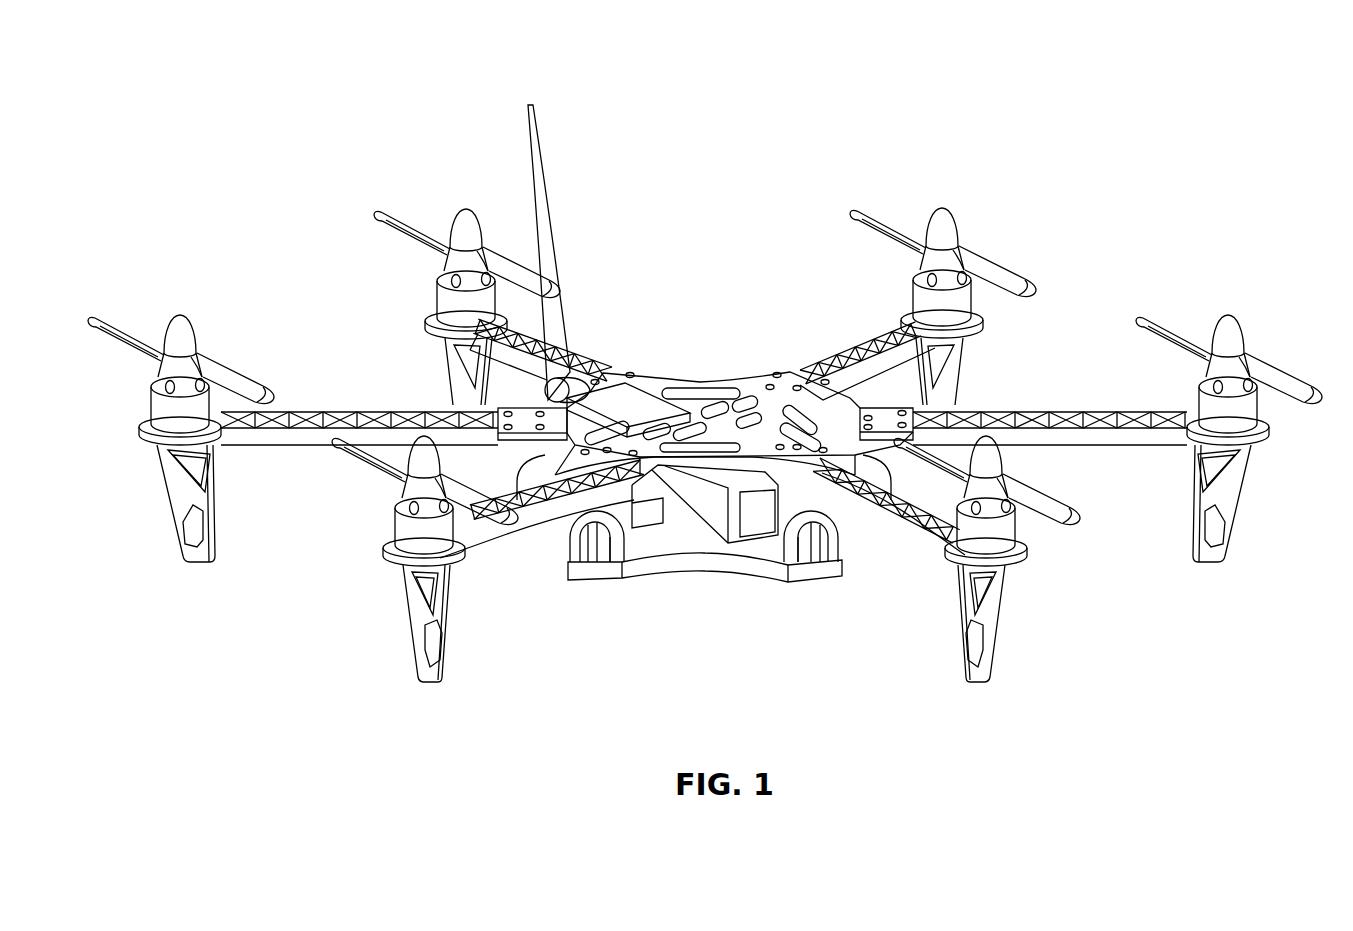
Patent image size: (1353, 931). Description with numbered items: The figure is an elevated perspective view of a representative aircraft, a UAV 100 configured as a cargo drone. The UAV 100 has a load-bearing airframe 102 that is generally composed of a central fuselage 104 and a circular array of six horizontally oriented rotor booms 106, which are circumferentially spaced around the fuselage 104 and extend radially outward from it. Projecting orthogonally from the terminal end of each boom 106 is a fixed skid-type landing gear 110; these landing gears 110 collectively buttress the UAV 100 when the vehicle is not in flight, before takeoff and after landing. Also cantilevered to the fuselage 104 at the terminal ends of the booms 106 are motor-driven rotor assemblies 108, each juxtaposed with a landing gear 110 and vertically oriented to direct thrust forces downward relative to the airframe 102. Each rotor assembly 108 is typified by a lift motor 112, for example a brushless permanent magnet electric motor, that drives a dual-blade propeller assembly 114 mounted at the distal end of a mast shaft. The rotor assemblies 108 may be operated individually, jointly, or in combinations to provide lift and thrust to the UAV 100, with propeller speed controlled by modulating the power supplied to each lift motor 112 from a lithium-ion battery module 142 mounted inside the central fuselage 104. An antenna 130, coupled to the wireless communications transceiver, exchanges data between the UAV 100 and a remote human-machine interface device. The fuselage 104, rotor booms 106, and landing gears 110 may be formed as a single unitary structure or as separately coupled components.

The UAV 100 is at (184, 114).
The airframe 102 is at (695, 274).
The central fuselage 104 is at (718, 372).
The rotor boom 106 is at (590, 362).
The rotor assembly 108 is at (715, 329).
The landing gear 110 is at (452, 383).
The lift motor 112 is at (1255, 410).
The dual-blade propeller assembly 114 is at (1283, 378).
The antenna 130 is at (537, 118).
The battery module 142 is at (706, 538).